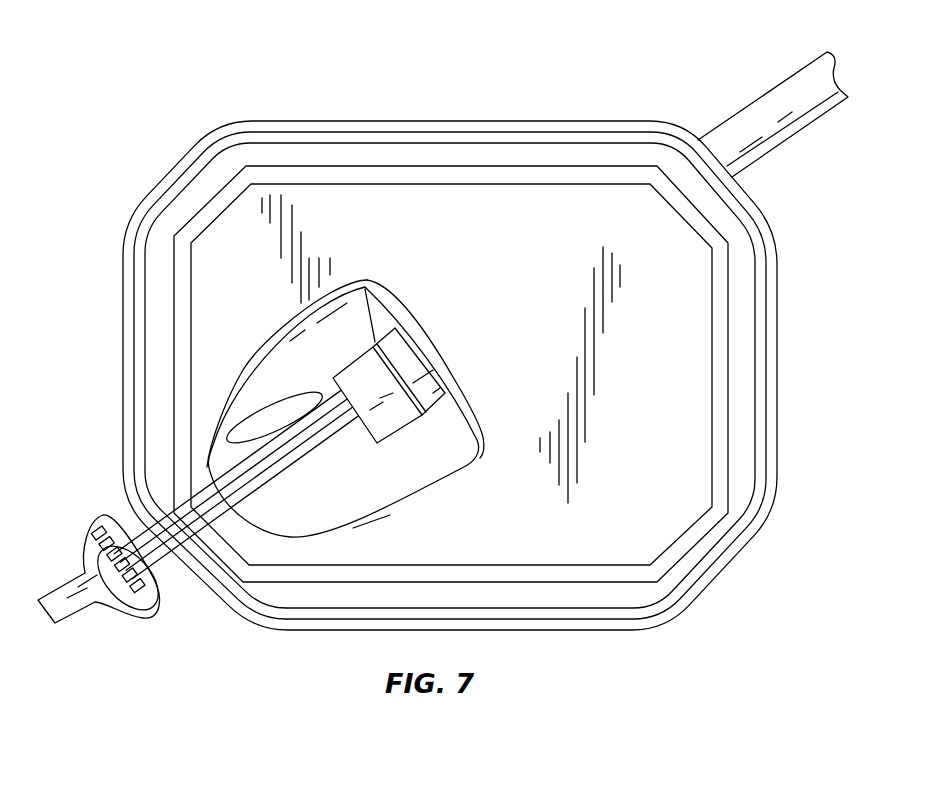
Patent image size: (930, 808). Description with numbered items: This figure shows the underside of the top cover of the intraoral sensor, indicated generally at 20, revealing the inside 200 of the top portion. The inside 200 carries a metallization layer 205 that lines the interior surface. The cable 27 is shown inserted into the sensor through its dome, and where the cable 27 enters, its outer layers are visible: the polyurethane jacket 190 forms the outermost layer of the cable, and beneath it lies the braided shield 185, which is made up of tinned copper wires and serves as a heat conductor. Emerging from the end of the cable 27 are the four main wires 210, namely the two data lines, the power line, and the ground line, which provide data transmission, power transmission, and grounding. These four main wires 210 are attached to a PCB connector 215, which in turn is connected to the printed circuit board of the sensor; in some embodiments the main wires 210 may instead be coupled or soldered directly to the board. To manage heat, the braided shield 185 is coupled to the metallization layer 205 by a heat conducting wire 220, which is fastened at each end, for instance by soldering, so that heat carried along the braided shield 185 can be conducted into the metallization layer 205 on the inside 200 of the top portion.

The collection bag assembly 20 is at (211, 77).
The cable 27 is at (766, 105).
The inside 200 is at (145, 283).
The metallization layer 205 is at (653, 371).
The heat conducting wire 220 is at (268, 398).
The braided shield 185 is at (400, 421).
The polyurethane jacket 190 is at (404, 368).
The PCB connector 215 is at (84, 550).
The main wires 210 is at (107, 605).